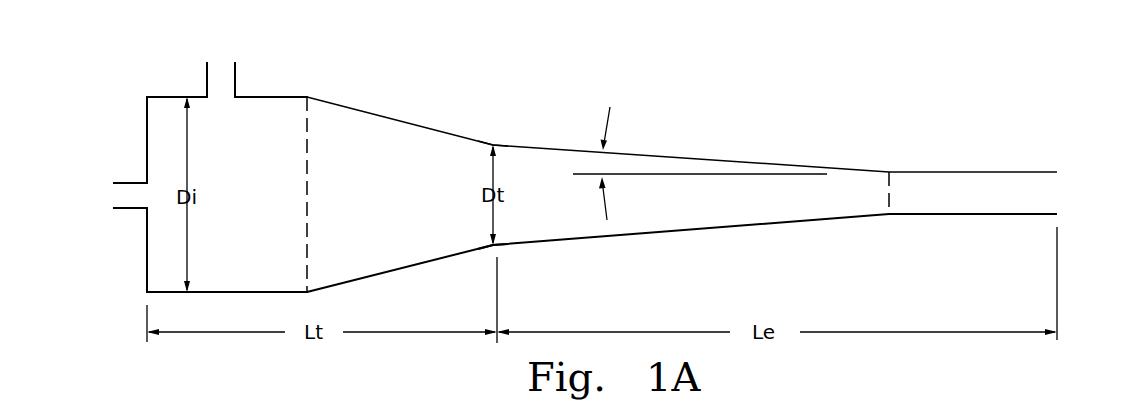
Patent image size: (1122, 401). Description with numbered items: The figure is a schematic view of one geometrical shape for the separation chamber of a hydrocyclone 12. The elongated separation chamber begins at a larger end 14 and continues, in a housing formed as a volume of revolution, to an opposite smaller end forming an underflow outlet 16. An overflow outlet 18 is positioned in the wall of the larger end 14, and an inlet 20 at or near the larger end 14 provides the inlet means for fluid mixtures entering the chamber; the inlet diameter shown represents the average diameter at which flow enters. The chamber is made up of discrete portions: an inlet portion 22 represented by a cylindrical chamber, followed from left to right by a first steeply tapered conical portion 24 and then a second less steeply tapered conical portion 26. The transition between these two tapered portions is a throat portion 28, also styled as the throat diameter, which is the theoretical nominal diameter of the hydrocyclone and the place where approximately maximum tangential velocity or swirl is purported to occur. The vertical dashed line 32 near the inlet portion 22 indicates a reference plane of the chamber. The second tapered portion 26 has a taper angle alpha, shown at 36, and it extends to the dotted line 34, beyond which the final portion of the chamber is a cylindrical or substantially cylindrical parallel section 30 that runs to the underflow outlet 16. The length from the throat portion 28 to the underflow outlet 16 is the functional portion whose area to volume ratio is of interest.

The hydrocyclone 12 is at (586, 151).
The larger end 14 is at (150, 139).
The underflow outlet 16 is at (1001, 178).
The overflow outlet 18 is at (104, 214).
The inlet 20 is at (247, 68).
The inlet portion 22 is at (283, 74).
The first steeply tapered conical portion 24 is at (400, 104).
The second less steeply tapered conical portion 26 is at (691, 141).
The throat portion 28 is at (515, 172).
The parallel section 30 is at (973, 148).
The inlet plane 32 is at (337, 194).
The dotted line 34 is at (870, 221).
The taper angle indication 36 is at (700, 150).